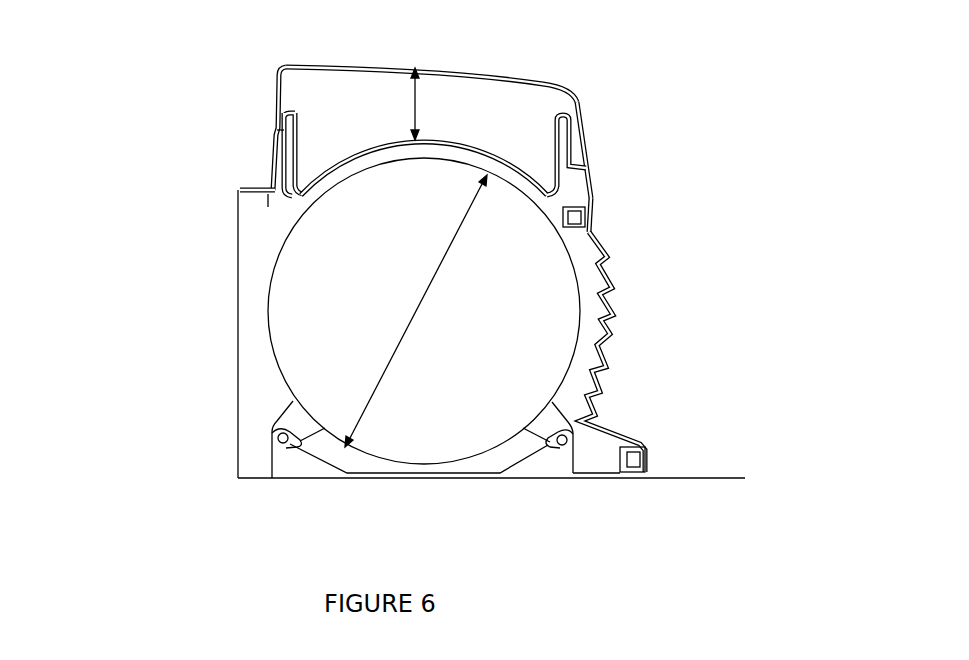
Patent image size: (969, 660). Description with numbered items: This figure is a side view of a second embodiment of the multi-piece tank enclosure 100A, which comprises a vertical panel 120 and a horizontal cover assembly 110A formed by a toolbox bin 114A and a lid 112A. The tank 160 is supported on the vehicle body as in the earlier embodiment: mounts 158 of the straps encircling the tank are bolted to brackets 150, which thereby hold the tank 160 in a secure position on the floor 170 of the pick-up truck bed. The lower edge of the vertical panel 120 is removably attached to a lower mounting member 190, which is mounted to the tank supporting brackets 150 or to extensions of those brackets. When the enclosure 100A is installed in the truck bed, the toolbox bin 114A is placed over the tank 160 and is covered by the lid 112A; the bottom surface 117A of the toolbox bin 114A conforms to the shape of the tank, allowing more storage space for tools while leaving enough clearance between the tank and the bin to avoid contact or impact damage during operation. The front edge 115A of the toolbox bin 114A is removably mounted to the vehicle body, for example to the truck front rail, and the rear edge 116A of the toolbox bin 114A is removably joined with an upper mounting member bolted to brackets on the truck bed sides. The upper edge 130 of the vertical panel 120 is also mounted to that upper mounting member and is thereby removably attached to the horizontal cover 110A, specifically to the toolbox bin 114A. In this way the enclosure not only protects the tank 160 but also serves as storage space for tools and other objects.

The multi-piece tank enclosure 100A is at (457, 288).
The horizontal cover assembly 110A is at (456, 124).
The lid 112A is at (543, 84).
The toolbox bin 114A is at (560, 142).
The front edge 115A is at (252, 190).
The rear edge 116A is at (588, 212).
The bottom surface 117A is at (360, 157).
The vertical panel 120 is at (601, 354).
The upper edge 130 is at (590, 229).
The brackets 150 is at (545, 465).
The mounts 158 is at (290, 412).
The tank 160 is at (323, 267).
The floor 170 is at (710, 478).
The lower mounting member 190 is at (632, 468).